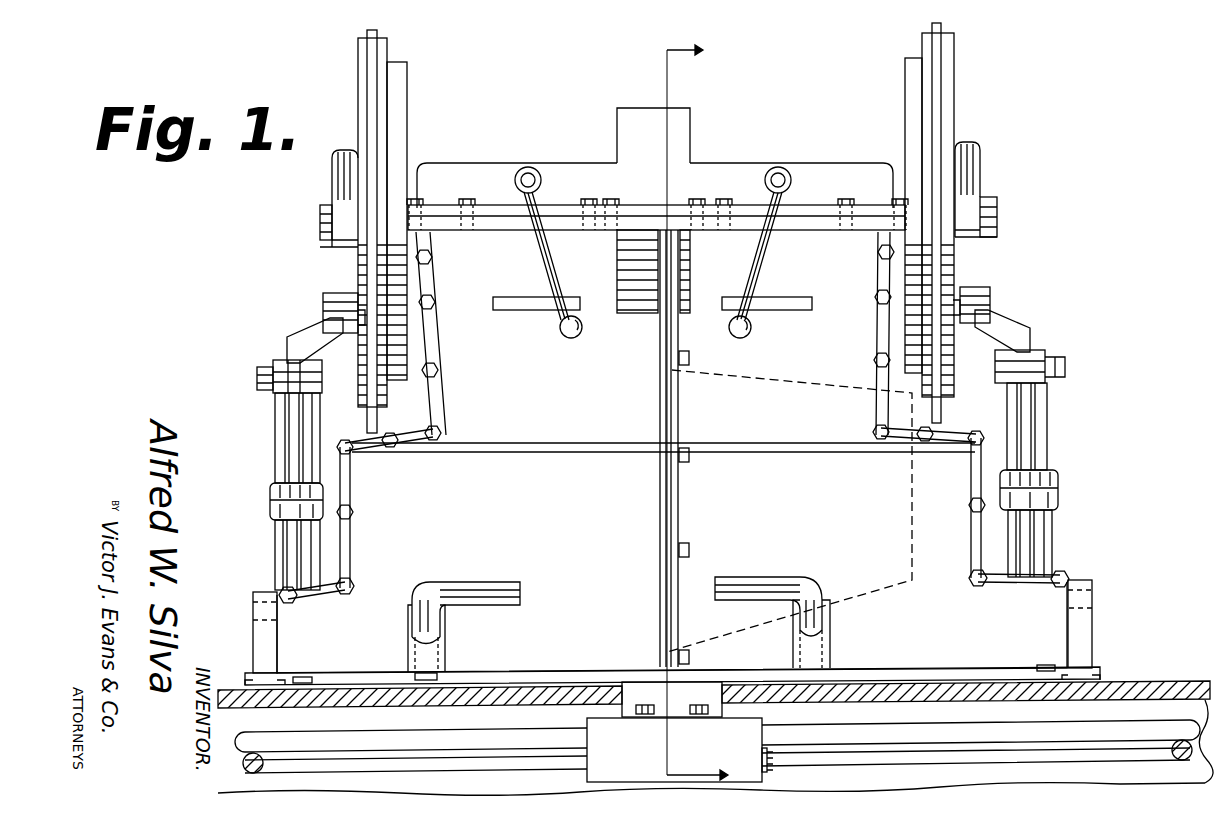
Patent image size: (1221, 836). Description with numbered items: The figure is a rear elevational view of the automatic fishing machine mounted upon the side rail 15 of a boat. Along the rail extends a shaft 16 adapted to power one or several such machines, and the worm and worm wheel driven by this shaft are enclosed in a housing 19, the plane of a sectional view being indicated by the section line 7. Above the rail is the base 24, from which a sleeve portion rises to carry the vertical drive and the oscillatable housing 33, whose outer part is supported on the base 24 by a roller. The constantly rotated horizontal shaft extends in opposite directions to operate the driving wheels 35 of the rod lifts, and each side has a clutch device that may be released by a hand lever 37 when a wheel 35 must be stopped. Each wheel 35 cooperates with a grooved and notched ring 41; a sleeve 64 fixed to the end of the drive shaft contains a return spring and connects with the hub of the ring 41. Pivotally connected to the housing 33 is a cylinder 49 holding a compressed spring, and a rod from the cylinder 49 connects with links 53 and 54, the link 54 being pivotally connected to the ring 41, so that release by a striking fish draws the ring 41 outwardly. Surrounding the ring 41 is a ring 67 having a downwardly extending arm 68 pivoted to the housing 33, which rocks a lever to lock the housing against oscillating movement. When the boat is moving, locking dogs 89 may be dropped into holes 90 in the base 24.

The section line 7- 7 is at (690, 412).
The side rail of a boat 15 is at (1133, 683).
The shaft 16 is at (1150, 730).
The housing 19 is at (690, 738).
The base 24 is at (529, 689).
The housing 33 is at (516, 468).
The driving wheel 35 is at (406, 78).
The hand lever 37 is at (562, 268).
The ring 41 is at (357, 62).
The cylinder 49 is at (280, 562).
The link 53 is at (278, 428).
The link 54 is at (298, 342).
The sleeve 64 is at (980, 150).
The ring 67 is at (373, 130).
The arm 68 is at (362, 452).
The locking dogs 89 is at (432, 630).
The holes 90 is at (415, 710).